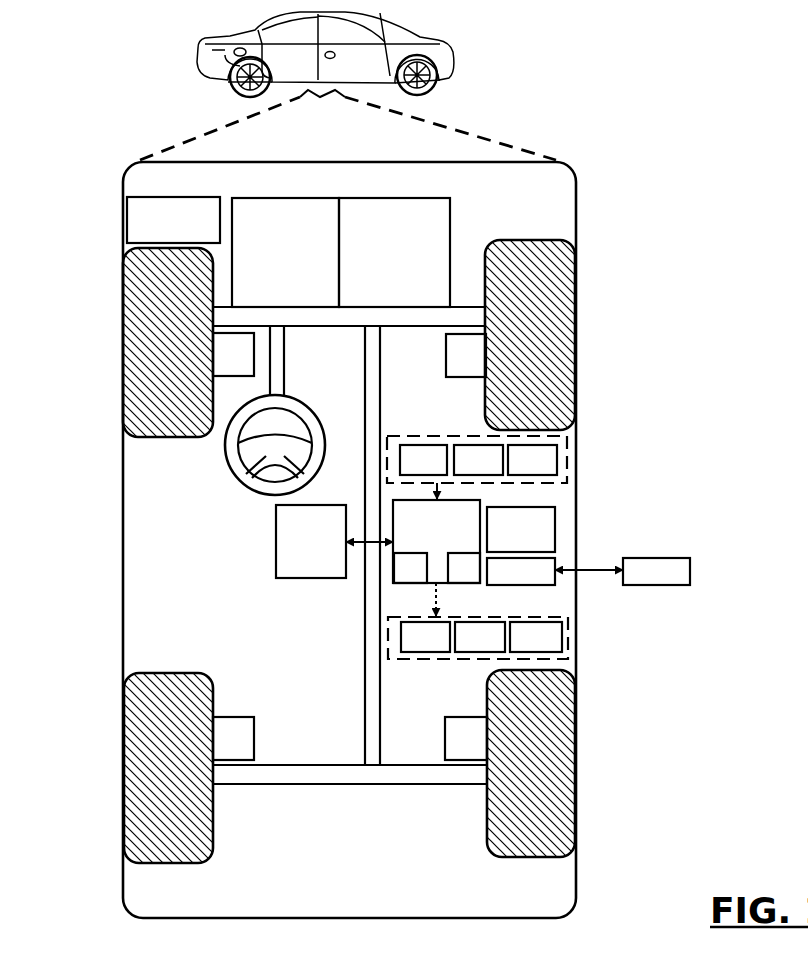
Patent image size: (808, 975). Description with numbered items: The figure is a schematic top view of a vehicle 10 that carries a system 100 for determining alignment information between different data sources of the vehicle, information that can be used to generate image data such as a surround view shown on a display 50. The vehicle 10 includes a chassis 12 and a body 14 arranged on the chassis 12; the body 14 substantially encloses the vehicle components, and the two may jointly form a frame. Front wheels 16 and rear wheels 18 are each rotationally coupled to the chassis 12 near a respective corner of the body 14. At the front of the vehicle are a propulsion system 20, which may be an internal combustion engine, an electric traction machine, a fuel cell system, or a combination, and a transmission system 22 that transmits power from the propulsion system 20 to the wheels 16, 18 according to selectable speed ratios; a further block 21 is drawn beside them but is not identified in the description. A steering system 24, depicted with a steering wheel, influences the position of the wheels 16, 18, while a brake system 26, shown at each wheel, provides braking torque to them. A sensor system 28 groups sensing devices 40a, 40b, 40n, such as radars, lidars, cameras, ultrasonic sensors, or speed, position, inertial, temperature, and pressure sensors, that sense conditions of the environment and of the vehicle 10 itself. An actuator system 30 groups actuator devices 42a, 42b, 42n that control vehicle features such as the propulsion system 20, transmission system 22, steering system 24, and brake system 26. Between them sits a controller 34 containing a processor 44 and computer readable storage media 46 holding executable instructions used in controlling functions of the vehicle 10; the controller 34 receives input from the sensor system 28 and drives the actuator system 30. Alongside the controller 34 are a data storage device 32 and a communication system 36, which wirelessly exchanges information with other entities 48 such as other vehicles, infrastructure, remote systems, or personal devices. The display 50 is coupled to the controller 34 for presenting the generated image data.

The vehicle 10 is at (208, 67).
The system 100 is at (731, 117).
The chassis 12 is at (365, 700).
The body 14 is at (123, 522).
The front wheels 16 is at (172, 437).
The rear wheels 18 is at (187, 863).
The propulsion system 20 is at (298, 262).
The energy storage / battery 21 is at (186, 230).
The transmission system 22 is at (408, 262).
The steering system 24 is at (303, 347).
The brake system 26 is at (222, 364).
The sensor system 28 is at (420, 436).
The actuator system 30 is at (415, 659).
The data storage device 32 is at (509, 539).
The controller 34 is at (425, 551).
The communication system 36 is at (509, 581).
The sensing device 40a is at (441, 470).
The sensing device 40b is at (496, 470).
The sensing device 40n is at (550, 470).
The actuator device 42a is at (443, 647).
The actuator device 42b is at (498, 647).
The actuator device 42n is at (554, 647).
The processor 44 is at (399, 578).
The computer readable storage device or media 46 is at (453, 578).
The other entities 48 is at (644, 581).
The display 50 is at (299, 552).